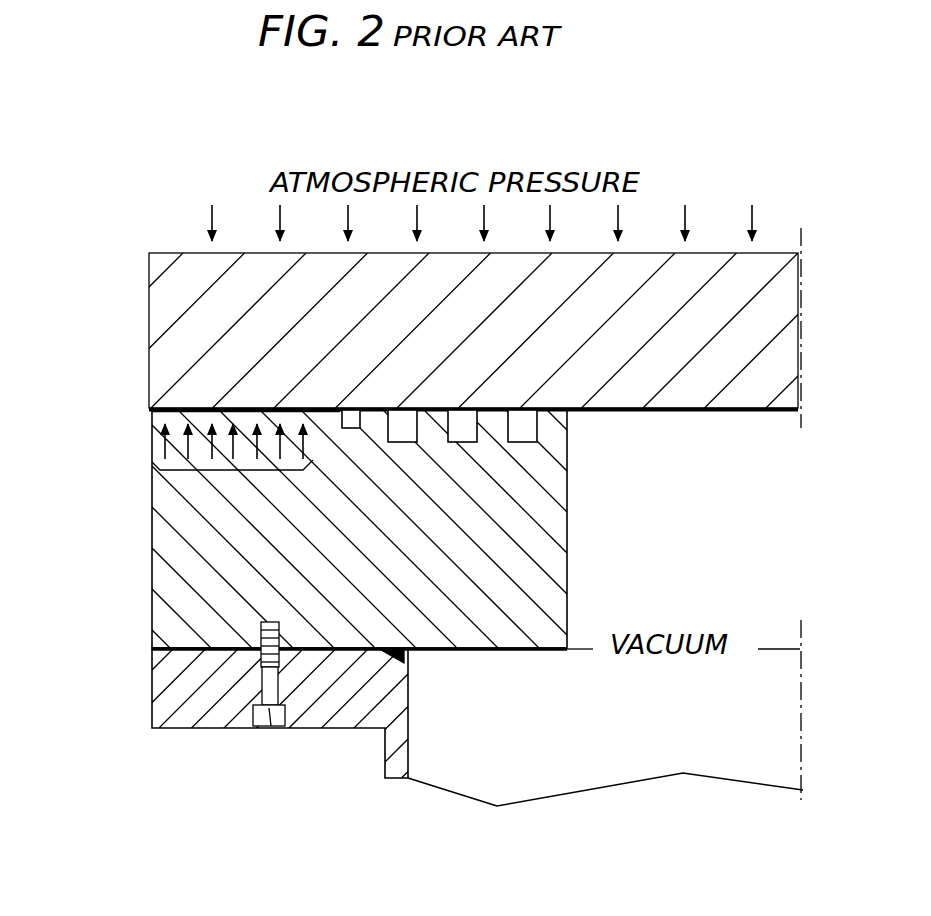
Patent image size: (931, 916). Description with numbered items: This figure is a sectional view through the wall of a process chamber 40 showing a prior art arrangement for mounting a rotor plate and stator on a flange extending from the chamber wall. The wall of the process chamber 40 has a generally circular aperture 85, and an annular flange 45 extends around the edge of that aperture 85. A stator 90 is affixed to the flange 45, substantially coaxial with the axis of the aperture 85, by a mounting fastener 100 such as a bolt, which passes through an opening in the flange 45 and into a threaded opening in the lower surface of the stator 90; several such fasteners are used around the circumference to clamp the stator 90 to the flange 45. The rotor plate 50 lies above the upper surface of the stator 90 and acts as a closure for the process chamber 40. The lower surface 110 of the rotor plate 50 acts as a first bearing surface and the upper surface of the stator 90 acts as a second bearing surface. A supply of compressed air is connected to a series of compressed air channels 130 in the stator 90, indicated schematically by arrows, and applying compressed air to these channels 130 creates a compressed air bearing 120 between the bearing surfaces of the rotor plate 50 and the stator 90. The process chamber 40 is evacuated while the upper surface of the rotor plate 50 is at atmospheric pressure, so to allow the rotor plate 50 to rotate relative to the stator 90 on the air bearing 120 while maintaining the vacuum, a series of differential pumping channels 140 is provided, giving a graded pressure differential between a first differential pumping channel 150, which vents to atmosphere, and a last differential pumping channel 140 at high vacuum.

The process chamber 40 is at (464, 805).
The annular flange 45 is at (155, 675).
The rotor plate 50 is at (163, 260).
The circular aperture 85 is at (629, 738).
The stator 90 is at (182, 553).
The mounting fastener 100 is at (272, 727).
The lower surface of the rotor plate 110 is at (738, 412).
The compressed air bearing 120 is at (138, 410).
The compressed air channels 130 is at (240, 471).
The differential pumping channels 140 is at (405, 443).
The first differential pumping channel 150 is at (352, 429).